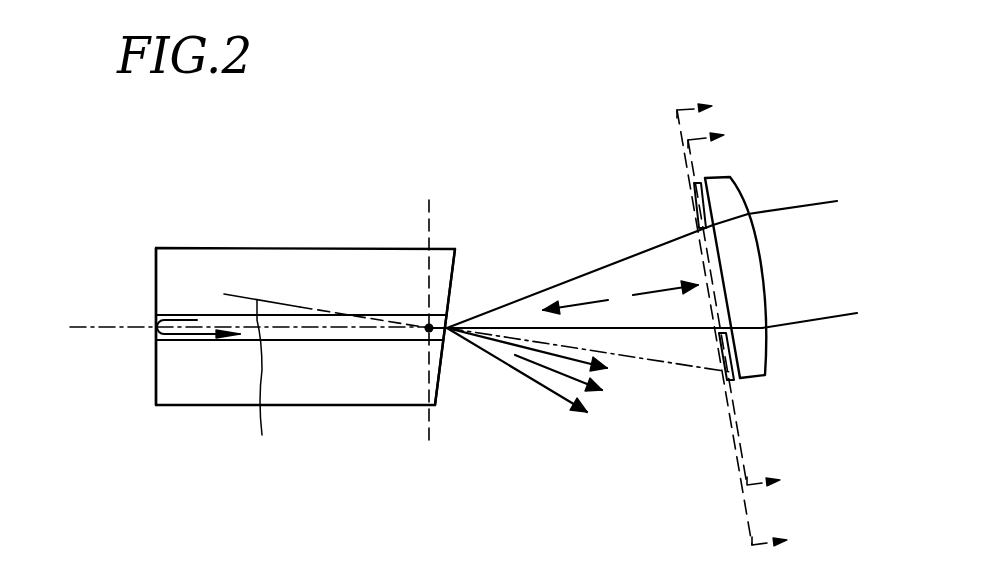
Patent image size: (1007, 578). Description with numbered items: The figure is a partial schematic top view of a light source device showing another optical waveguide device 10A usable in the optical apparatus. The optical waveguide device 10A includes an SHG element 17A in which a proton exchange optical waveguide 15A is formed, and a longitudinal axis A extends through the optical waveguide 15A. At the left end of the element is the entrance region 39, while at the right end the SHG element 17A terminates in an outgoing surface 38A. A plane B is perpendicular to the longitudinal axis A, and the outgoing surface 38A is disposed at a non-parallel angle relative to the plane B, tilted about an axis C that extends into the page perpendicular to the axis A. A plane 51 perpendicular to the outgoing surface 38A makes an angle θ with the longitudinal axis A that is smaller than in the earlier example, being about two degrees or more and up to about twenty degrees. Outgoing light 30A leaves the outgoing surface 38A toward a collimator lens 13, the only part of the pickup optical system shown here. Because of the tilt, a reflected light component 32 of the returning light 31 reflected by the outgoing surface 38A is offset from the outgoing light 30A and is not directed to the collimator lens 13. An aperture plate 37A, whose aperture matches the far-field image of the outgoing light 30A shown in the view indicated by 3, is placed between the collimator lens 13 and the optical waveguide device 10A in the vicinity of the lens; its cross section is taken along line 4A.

The optical waveguide device 10A is at (308, 329).
The SHG element 17A is at (310, 412).
The proton exchange optical waveguide 15A is at (365, 341).
The incident end face 39 is at (153, 267).
The outgoing surface 38A is at (443, 388).
The plane perpendicular to outgoing surface 51 is at (307, 307).
The outgoing light 30A is at (650, 288).
The returning light 31 is at (583, 305).
The reflected light component 32 is at (550, 373).
The aperture plate 37A is at (707, 203).
The collimator lens 13 is at (753, 377).
The far-field image figure reference 3 is at (744, 314).
The section line 4A- 4A is at (755, 304).
The longitudinal axis A is at (237, 328).
The plane perpendicular to longitudinal axis B is at (430, 303).
The axis extending into the page C is at (424, 307).